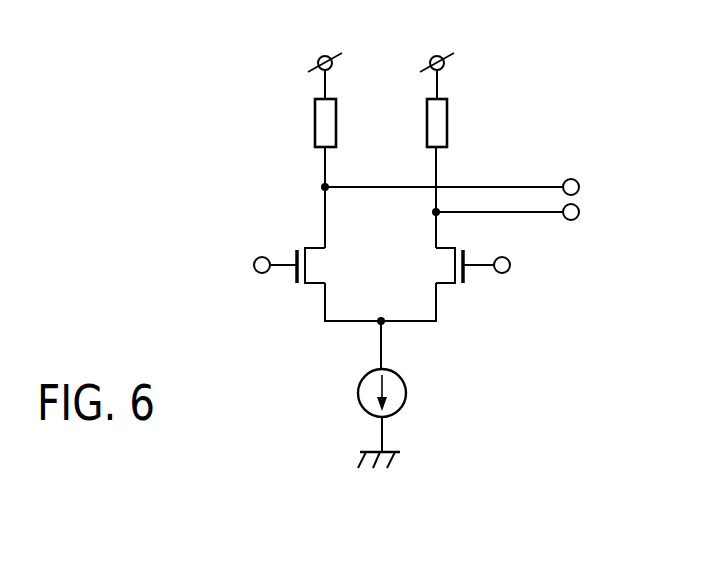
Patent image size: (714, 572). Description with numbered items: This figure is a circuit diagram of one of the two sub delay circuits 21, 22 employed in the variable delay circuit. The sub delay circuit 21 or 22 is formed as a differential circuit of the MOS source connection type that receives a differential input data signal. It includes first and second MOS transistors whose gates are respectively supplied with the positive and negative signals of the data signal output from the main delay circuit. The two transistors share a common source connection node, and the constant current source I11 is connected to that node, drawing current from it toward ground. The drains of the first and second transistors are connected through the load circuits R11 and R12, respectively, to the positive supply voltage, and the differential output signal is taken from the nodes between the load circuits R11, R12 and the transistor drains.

The sub delay circuit 21 is at (264, 198).
The sub delay circuit 22 is at (450, 262).
The load circuit R11 is at (300, 108).
The load circuit R12 is at (463, 108).
The constant current source I11 is at (359, 369).